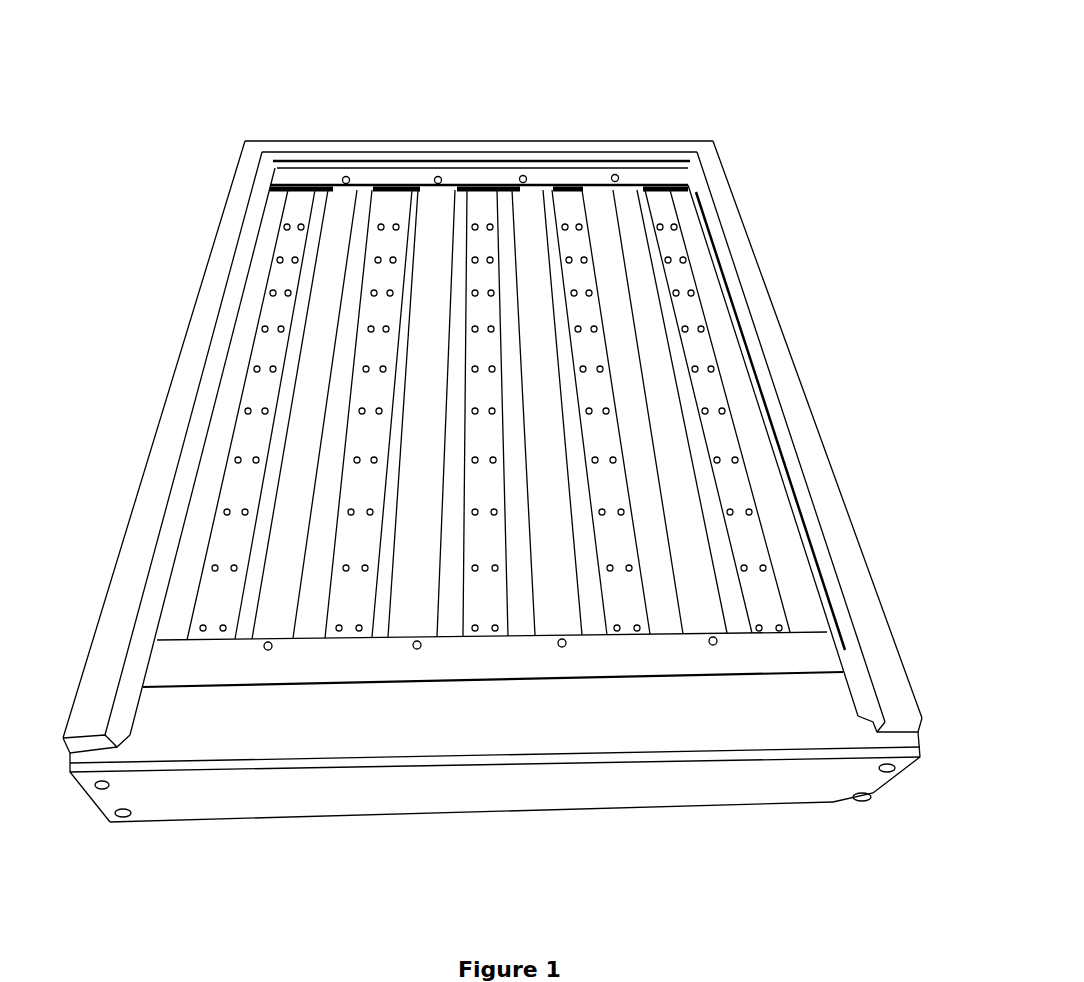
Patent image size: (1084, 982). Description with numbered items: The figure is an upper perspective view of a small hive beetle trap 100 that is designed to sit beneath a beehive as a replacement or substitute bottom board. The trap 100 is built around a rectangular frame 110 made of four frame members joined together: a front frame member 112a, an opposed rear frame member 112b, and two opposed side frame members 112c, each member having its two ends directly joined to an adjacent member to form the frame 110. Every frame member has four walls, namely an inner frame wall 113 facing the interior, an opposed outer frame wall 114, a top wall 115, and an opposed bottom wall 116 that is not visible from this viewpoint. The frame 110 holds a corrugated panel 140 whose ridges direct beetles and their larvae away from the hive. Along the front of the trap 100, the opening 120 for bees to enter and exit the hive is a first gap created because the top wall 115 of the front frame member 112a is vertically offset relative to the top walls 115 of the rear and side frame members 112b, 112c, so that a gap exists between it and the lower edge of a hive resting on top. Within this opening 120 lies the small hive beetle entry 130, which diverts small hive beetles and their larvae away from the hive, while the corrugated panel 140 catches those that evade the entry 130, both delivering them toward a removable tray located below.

The small hive beetle trap 100 is at (738, 92).
The frame 110 is at (770, 276).
The front frame member 112a is at (255, 793).
The rear frame member 112b is at (410, 141).
The side frame members 112c is at (213, 272).
The inner frame wall 113 is at (212, 426).
The outer frame wall 114 is at (182, 332).
The top wall 115 is at (145, 528).
The bottom wall 116 is at (833, 803).
The opening 120 is at (375, 718).
The small hive beetle entry 130 is at (520, 686).
The corrugated panel 140 is at (340, 218).